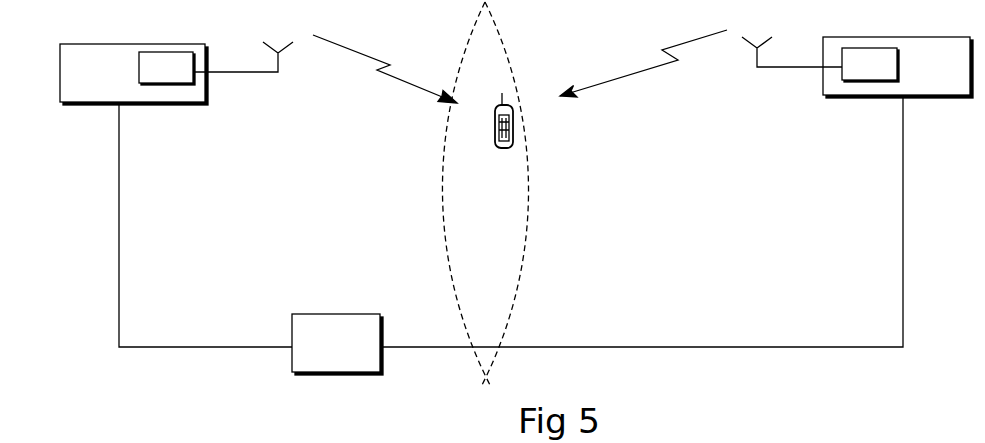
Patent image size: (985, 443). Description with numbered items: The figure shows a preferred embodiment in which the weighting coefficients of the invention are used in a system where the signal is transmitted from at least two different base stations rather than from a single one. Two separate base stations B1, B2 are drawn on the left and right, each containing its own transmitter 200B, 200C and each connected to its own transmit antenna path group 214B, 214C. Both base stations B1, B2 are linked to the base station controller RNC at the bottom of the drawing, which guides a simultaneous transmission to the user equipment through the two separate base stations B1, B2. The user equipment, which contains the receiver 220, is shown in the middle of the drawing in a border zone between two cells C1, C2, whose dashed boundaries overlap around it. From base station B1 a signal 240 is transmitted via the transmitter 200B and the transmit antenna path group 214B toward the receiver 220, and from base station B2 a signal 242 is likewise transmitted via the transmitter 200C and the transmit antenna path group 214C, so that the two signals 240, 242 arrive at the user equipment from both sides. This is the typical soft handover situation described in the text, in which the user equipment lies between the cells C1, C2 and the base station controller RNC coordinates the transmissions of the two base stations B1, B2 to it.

The transmitter 200B is at (167, 68).
The transmitter 200C is at (870, 65).
The transmit antenna path group 214B is at (267, 80).
The transmit antenna path group 214C is at (813, 68).
The receiver 220 is at (507, 152).
The signal 240 is at (385, 73).
The signal 242 is at (670, 63).
The base station B1 is at (134, 74).
The base station B2 is at (898, 67).
The base station controller RNC is at (337, 344).
The cell C1 is at (445, 193).
The cell C2 is at (523, 193).